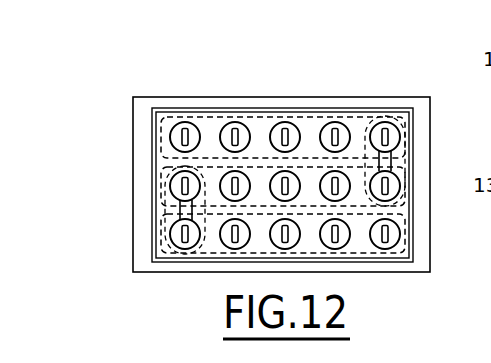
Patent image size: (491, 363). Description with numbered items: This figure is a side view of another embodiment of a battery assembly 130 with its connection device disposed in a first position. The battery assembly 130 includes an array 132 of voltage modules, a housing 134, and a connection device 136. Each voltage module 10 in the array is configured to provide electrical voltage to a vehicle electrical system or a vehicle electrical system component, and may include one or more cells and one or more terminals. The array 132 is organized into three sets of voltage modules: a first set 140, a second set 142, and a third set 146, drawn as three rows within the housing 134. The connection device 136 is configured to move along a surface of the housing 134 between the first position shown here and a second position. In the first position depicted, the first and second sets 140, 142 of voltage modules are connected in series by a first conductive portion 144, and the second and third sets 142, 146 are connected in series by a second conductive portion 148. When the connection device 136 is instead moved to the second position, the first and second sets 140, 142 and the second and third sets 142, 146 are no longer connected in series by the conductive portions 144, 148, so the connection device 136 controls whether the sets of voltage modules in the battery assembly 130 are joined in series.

The voltage module 10 is at (321, 118).
The battery assembly 130 is at (254, 165).
The array of voltage modules 132 is at (214, 185).
The housing 134 is at (360, 108).
The connection device 136 is at (141, 86).
The first set of voltage modules 140 is at (152, 157).
The second set of voltage modules 142 is at (152, 171).
The first conductive portion 144 is at (396, 160).
The third set of voltage modules 146 is at (238, 231).
The second conductive portion 148 is at (182, 244).